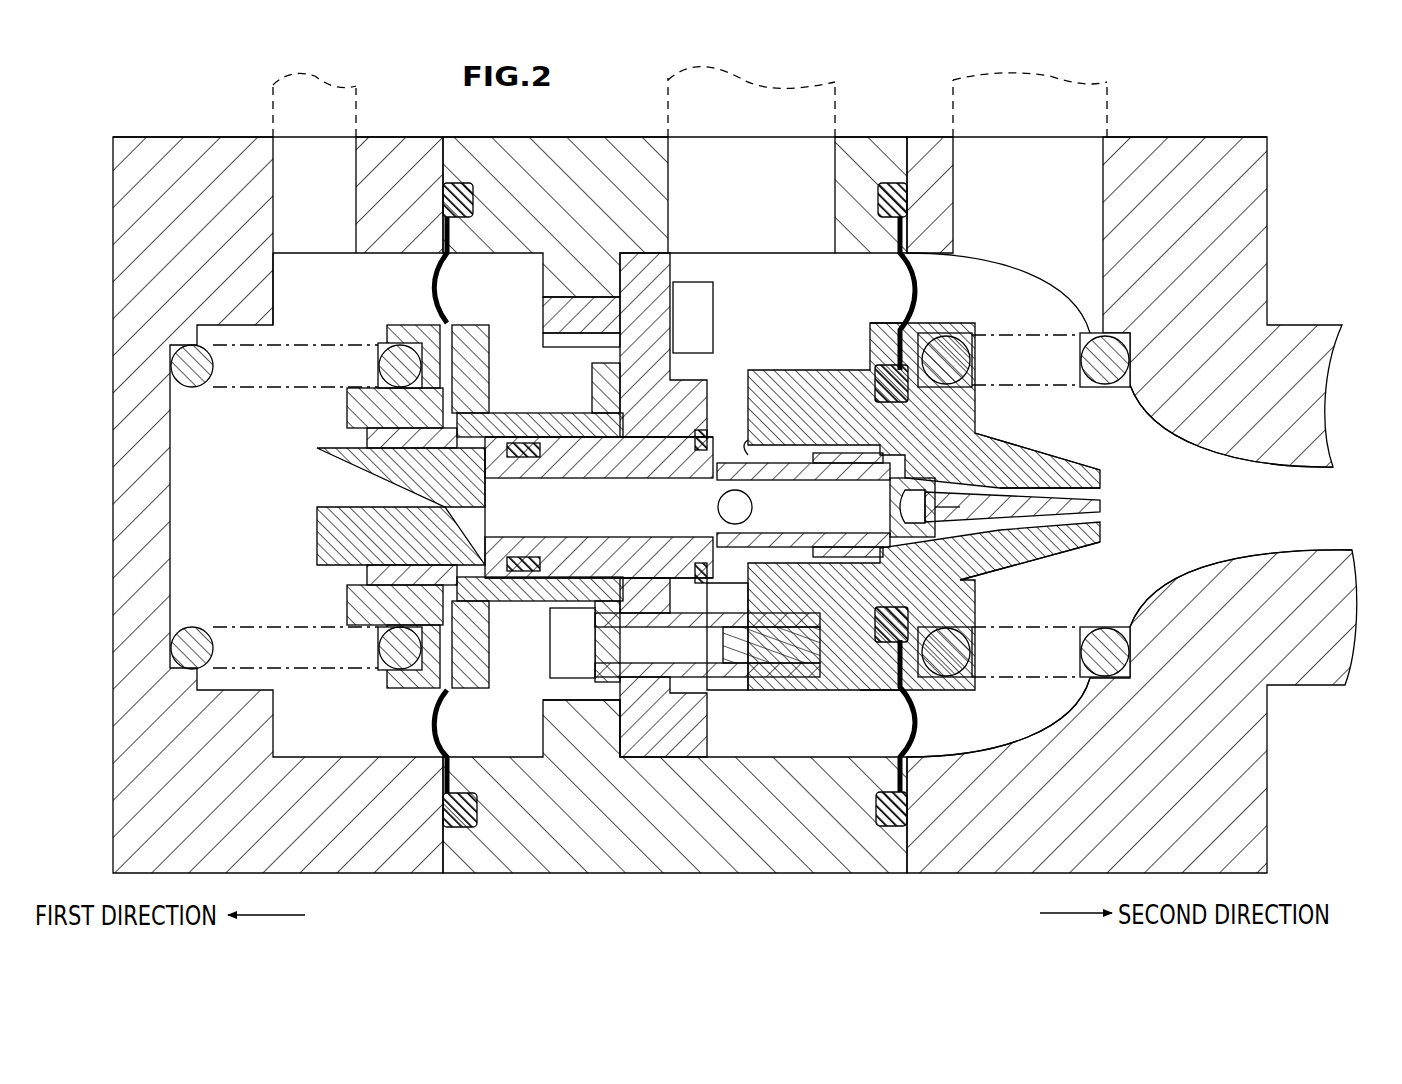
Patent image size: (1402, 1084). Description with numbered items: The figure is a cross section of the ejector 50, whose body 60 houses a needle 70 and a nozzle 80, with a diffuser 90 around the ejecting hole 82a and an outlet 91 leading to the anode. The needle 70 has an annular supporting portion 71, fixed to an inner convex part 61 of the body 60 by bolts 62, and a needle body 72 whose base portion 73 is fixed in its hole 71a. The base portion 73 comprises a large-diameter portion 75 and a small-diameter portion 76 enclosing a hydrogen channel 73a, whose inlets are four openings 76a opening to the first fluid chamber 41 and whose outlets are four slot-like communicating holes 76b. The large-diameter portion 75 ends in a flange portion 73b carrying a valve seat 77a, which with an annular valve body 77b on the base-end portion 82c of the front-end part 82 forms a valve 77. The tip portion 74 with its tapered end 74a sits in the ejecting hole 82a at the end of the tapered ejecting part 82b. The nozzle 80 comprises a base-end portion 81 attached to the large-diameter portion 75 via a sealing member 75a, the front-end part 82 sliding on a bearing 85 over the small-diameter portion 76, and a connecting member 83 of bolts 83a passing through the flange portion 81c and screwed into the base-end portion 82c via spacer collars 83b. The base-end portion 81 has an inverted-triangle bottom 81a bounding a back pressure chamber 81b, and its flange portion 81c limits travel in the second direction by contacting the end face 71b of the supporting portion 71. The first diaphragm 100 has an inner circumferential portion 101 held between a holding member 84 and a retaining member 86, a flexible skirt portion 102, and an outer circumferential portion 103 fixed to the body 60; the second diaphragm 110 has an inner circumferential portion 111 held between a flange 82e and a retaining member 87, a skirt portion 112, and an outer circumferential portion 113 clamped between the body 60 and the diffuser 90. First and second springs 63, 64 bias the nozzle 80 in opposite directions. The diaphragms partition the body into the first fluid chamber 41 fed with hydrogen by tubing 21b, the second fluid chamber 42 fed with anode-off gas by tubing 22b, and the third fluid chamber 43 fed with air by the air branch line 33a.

The first passage 33a is at (270, 97).
The diaphragm seal bead 103 is at (452, 197).
The annular member 62 is at (565, 305).
The housing body 61 is at (587, 283).
The housing 60 is at (628, 134).
The second passage 21b is at (845, 92).
The third passage 22b is at (1108, 90).
The nozzle housing 90 is at (1240, 133).
The valve device 50 is at (1288, 180).
The guide portion 71a is at (690, 425).
The diaphragm seal bead 113 is at (885, 198).
The flange portion 73b is at (660, 430).
The clamp ring 112 is at (960, 263).
The first diaphragm 100 is at (412, 457).
The first chamber 41 is at (813, 288).
The second diaphragm 110 is at (882, 501).
The diaphragm membrane 102 is at (437, 300).
The seal member 77 is at (908, 387).
The valve body flange 82e is at (880, 340).
The O-ring 87 is at (940, 320).
The piston arm 81c is at (590, 363).
The first seal portion 77a is at (737, 393).
The second seal portion 77b is at (748, 418).
The seal ring 75a is at (520, 443).
The bearing member 75 is at (567, 422).
The diaphragm retainer 101 is at (450, 388).
The diaphragm seal bead 111 is at (895, 392).
The needle 74 is at (1014, 498).
The valve body 82 is at (938, 516).
The first piston portion 81a is at (450, 490).
The outer nozzle portion 82b is at (1085, 478).
The third chamber 43 is at (228, 516).
The shaft bore 73a is at (552, 521).
The support portion 71b is at (620, 460).
The orifice 76a is at (752, 507).
The inner tube 76 is at (883, 530).
The nozzle tip 82a is at (1100, 500).
The second chamber 42 is at (1168, 531).
The outlet passage 91 is at (1325, 507).
The second piston portion 81b is at (450, 515).
The needle tip 74a is at (1093, 545).
The tube end 76b is at (975, 560).
The O-ring 63 is at (195, 635).
The shaft 73 is at (599, 557).
The piston 81 is at (444, 508).
The valve body base 85 is at (860, 660).
The O-ring 64 is at (955, 677).
The seal holder 86 is at (402, 690).
The retainer 84 is at (470, 690).
The valve unit 80 is at (790, 700).
The valve body flange 82c is at (885, 690).
The base member 72 is at (570, 723).
The support member 71 is at (665, 750).
The rod sleeve 83a is at (715, 695).
The rod 83b is at (755, 690).
The support assembly 70 is at (625, 765).
The rod assembly 83 is at (707, 782).